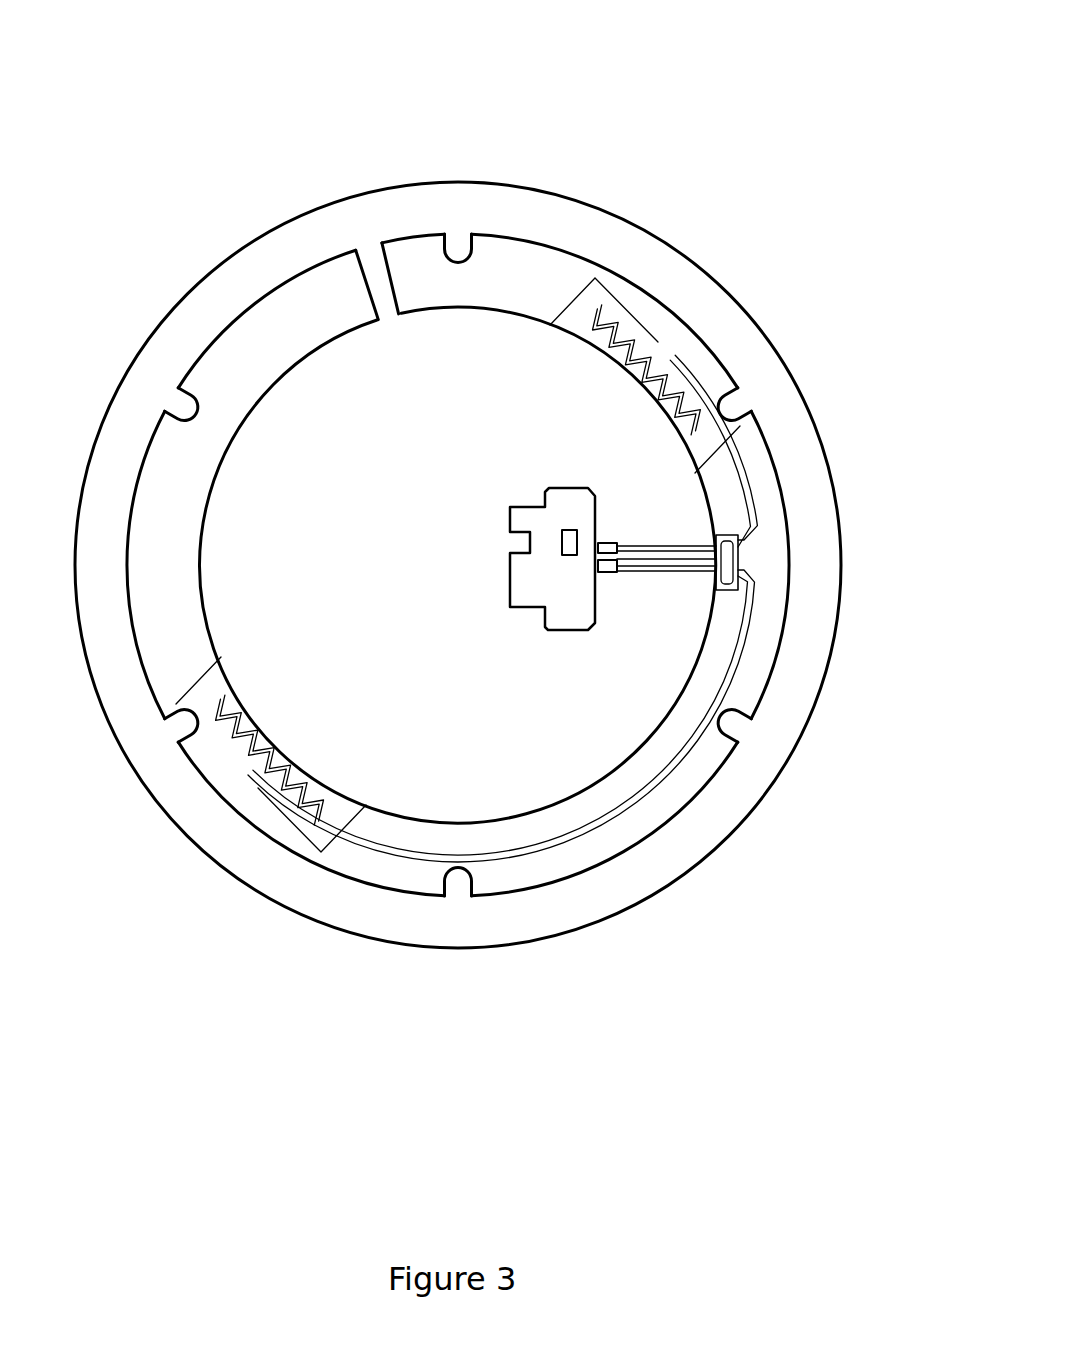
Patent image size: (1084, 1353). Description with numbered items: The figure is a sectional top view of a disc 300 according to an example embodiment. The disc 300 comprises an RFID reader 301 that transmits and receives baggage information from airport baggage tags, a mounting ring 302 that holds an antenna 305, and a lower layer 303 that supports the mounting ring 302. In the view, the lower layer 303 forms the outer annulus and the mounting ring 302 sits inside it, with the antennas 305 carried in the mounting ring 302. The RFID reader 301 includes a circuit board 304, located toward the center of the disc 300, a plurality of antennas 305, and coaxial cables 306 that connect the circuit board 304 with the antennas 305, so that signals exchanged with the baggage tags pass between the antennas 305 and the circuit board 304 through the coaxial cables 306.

The disc 300 is at (228, 58).
The RFID reader 301 is at (578, 462).
The mounting ring 302 is at (260, 367).
The lower layer 303 is at (353, 220).
The circuit board 304 is at (578, 592).
The antenna 305 is at (618, 327).
The coaxial cables 306 is at (685, 557).